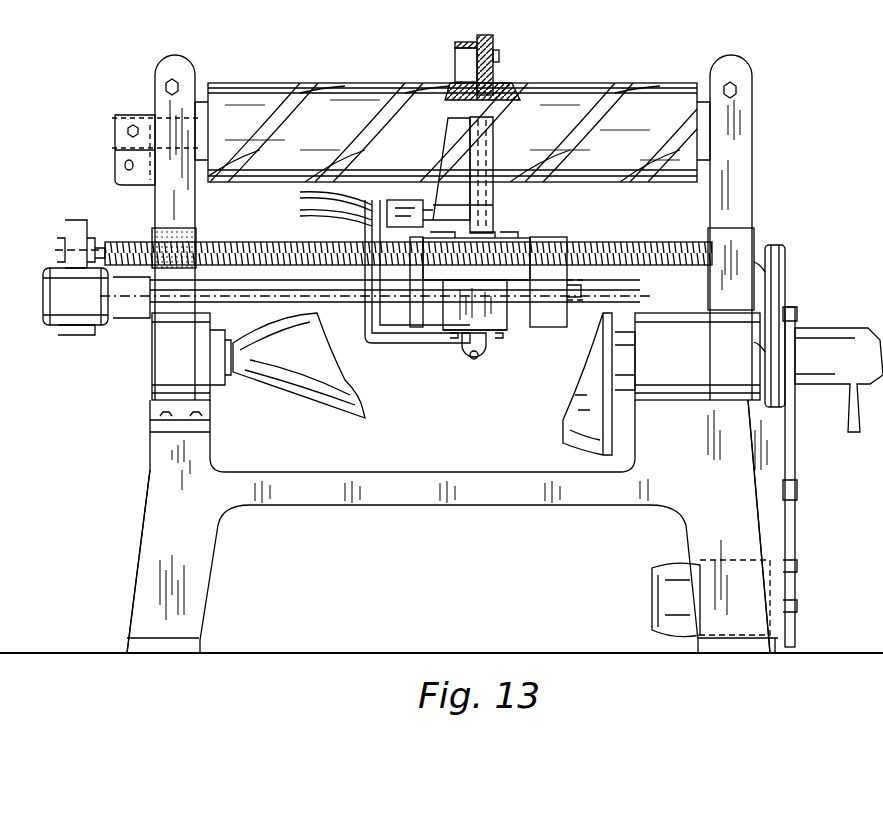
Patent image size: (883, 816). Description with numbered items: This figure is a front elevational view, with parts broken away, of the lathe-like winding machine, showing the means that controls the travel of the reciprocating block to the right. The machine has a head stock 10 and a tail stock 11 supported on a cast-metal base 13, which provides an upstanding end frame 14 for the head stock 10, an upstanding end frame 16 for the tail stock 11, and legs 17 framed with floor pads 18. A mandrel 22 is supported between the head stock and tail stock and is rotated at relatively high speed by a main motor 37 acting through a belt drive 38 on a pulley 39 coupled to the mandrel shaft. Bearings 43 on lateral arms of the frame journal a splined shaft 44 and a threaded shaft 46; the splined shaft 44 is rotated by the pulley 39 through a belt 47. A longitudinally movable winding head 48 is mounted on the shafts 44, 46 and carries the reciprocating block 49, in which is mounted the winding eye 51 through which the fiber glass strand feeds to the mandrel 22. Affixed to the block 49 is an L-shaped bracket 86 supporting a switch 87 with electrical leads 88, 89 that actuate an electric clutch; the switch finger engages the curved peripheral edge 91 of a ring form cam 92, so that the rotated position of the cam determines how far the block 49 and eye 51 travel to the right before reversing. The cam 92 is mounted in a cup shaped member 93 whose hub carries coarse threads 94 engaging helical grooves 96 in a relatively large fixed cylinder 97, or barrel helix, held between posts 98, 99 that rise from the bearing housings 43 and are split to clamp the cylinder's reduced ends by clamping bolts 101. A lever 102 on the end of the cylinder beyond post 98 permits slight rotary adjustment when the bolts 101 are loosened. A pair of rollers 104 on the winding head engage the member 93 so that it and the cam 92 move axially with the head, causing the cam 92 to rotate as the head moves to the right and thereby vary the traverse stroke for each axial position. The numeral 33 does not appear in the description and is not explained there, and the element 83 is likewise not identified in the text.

The head stock 10 is at (752, 400).
The tail stock 11 is at (165, 366).
The base 13 is at (380, 505).
The upstanding end frame 14 is at (740, 475).
The upstanding end frame 16 is at (162, 445).
The legs 17 is at (150, 560).
The floor pads 18 is at (170, 647).
The mandrel 22 is at (332, 400).
The drive element 33 is at (5, 188).
The main motor 37 is at (650, 578).
The belt drive 38 is at (792, 500).
The pulley 39 is at (796, 320).
The bearings 43 is at (160, 222).
The splined shaft 44 is at (362, 300).
The threaded shaft 46 is at (612, 260).
The belt 47 is at (786, 250).
The winding head 48 is at (568, 233).
The reciprocating block 49 is at (530, 335).
The winding eye 51 is at (483, 360).
The motor 83 is at (50, 330).
The L-shaped bracket 86 is at (395, 345).
The switch 87 is at (392, 218).
The electrical lead 88 is at (300, 194).
The electrical lead 89 is at (300, 212).
The peripheral cam edge 91 is at (456, 64).
The ring form cam 92 is at (458, 44).
The cup shaped member 93 is at (493, 40).
The coarse threads 94 is at (495, 90).
The helical grooves 96 is at (296, 90).
The cylinder 97 is at (384, 92).
The post 98 is at (160, 100).
The post 99 is at (745, 100).
The clamping bolts 101 is at (178, 87).
The lever 102 is at (118, 155).
The rollers 104 is at (470, 215).